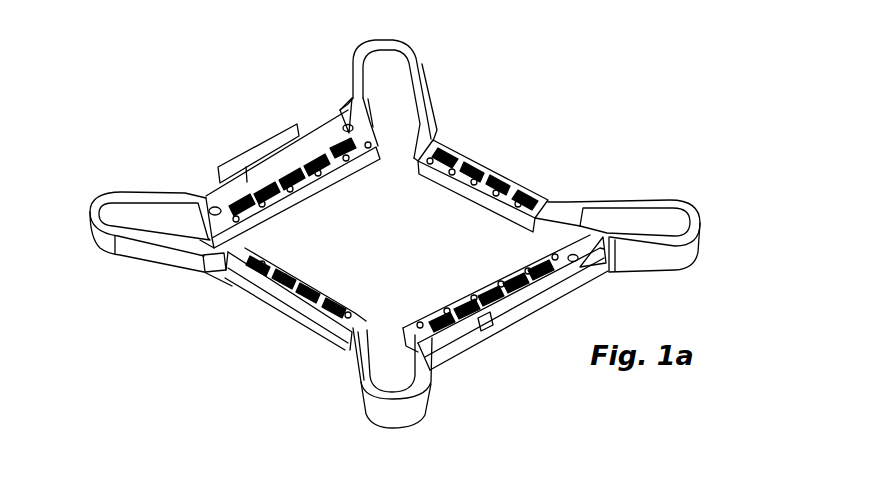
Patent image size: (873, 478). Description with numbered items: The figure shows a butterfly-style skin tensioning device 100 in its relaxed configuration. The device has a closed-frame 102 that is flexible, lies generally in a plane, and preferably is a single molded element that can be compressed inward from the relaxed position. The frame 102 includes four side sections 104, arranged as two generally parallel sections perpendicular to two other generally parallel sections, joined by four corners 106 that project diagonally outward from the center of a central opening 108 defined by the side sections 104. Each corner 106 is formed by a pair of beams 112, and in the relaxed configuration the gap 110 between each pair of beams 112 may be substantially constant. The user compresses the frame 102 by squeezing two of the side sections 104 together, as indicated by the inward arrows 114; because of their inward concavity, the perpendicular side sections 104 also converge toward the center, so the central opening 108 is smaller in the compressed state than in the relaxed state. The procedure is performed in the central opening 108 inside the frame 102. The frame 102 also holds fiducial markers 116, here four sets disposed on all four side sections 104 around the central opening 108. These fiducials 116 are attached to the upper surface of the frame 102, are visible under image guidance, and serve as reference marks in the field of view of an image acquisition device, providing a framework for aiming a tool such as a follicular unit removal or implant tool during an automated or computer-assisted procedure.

The skin tensioning device 100 is at (418, 245).
The closed-frame 102 is at (213, 193).
The side section 104 is at (267, 163).
The corner 106 is at (368, 42).
The central opening 108 is at (369, 246).
The gap 110 is at (383, 338).
The beam 112 is at (360, 390).
The inward arrows 114 is at (613, 70).
The fiducial marker 116 is at (345, 140).